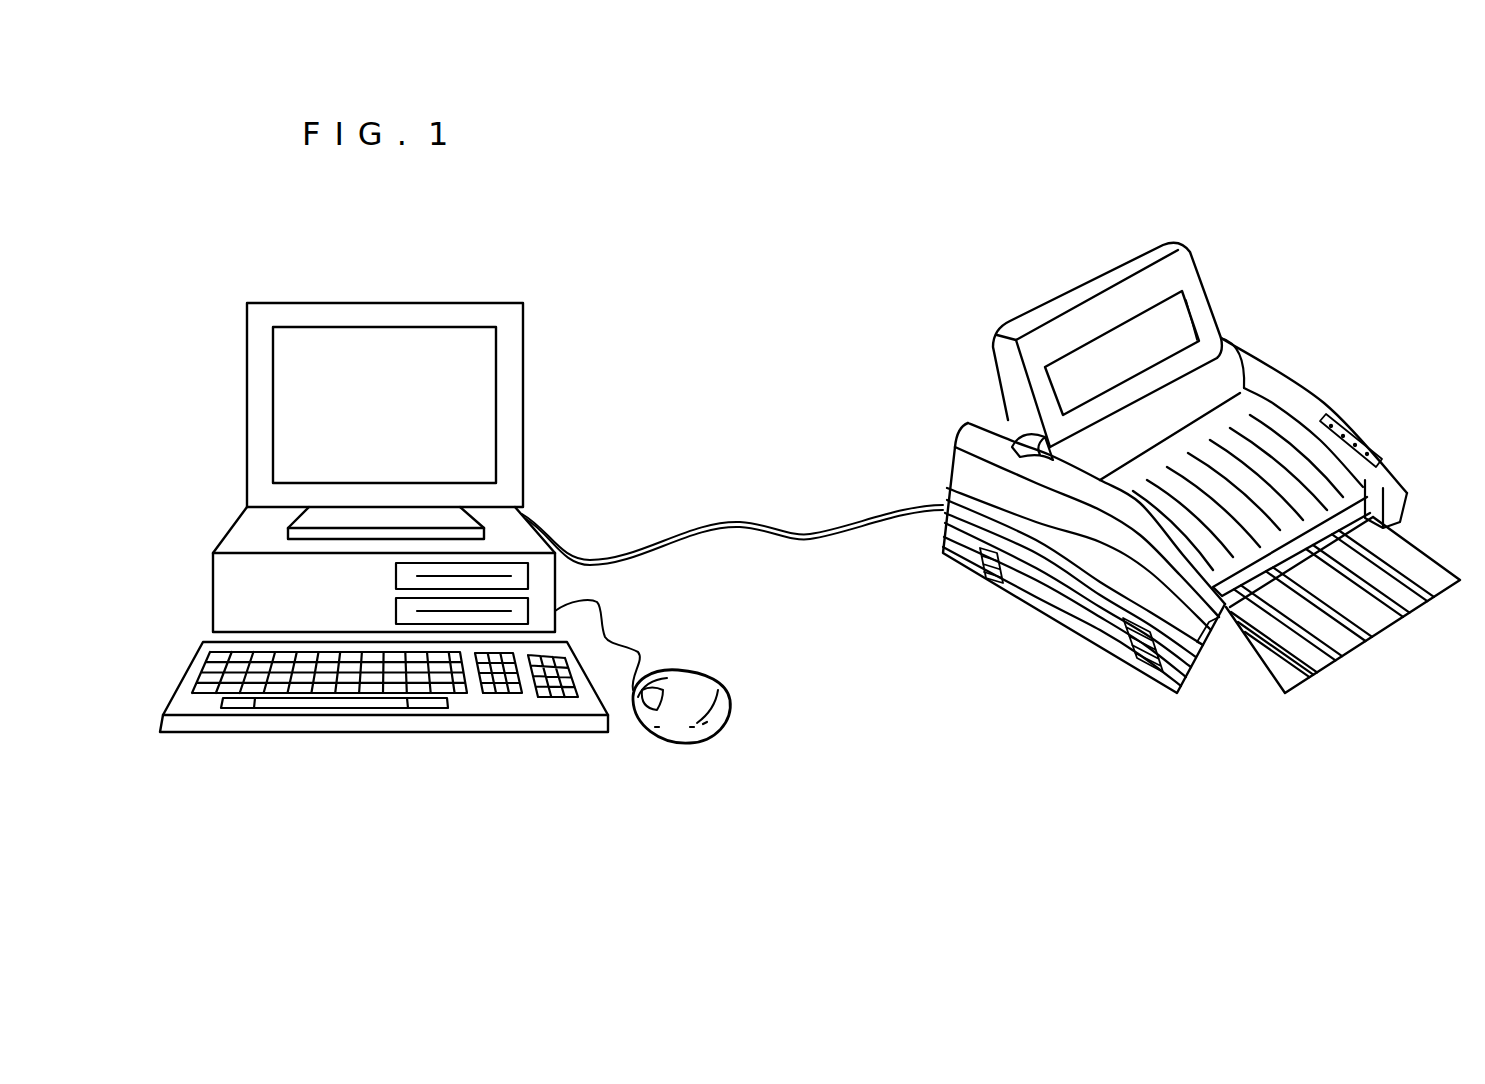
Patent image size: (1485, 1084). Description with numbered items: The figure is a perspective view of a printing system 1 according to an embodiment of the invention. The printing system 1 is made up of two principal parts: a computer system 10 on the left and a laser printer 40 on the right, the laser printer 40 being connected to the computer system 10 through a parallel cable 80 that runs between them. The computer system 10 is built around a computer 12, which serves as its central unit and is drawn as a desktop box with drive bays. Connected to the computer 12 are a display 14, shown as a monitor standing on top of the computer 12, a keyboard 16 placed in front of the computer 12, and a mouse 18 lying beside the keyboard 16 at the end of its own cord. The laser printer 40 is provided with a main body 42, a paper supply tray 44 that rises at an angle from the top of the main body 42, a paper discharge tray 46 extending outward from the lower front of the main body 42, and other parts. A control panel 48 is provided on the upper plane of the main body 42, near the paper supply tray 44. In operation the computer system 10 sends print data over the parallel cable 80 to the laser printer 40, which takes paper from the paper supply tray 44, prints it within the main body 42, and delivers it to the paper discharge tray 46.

The printing system 1 is at (709, 276).
The computer system 10 is at (545, 264).
The computer 12 is at (507, 527).
The display 14 is at (513, 365).
The keyboard 16 is at (535, 726).
The mouse 18 is at (693, 685).
The laser printer 40 is at (938, 264).
The main body 42 is at (1037, 588).
The paper supply tray 44 is at (1105, 303).
The paper discharge tray 46 is at (1287, 655).
The control panel 48 is at (1310, 433).
The parallel cable 80 is at (825, 528).